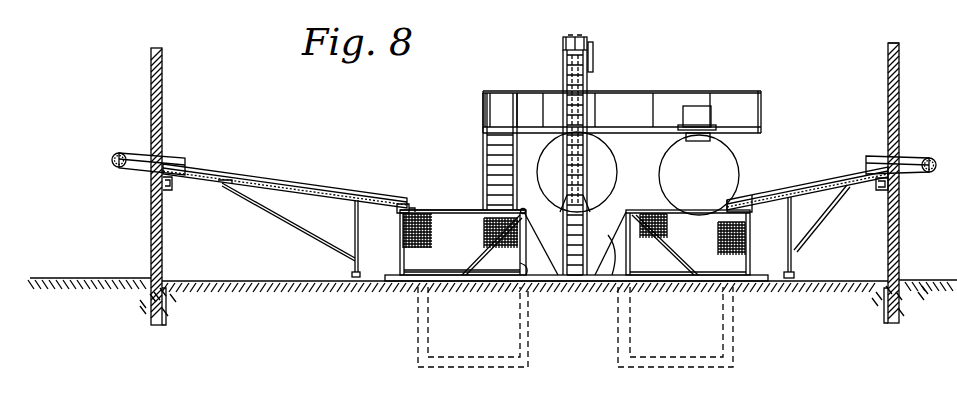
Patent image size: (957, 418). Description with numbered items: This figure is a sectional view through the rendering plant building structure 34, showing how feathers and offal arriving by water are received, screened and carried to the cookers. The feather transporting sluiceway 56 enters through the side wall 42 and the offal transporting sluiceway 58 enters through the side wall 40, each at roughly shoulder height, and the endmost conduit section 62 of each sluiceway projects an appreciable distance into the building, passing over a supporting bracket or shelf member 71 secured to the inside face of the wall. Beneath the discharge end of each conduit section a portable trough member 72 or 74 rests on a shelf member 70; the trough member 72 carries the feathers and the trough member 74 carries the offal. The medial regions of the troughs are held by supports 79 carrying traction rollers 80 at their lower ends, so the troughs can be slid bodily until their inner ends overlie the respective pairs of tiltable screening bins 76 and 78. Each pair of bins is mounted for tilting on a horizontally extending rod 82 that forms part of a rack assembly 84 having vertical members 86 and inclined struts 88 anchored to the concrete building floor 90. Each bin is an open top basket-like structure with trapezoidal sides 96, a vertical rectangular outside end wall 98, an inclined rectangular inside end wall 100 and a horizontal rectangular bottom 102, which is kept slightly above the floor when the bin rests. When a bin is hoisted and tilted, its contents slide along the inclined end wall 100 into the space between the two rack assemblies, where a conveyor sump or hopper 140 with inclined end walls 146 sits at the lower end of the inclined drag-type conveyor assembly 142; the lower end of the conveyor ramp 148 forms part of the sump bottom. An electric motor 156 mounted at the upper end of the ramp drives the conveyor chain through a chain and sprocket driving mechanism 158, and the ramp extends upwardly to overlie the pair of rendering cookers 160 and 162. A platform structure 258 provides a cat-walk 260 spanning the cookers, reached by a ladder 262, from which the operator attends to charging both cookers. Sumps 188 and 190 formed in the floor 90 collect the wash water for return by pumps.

The building structure 34 is at (902, 91).
The side wall 40 is at (887, 66).
The side wall 42 is at (163, 83).
The sluiceway 56 is at (117, 169).
The sluiceway 58 is at (913, 177).
The conduit section 62 is at (137, 155).
The shelf member 70 is at (170, 187).
The supporting bracket or shelf member 71 is at (874, 186).
The portable trough member 72 is at (301, 194).
The portable trough member 74 is at (808, 196).
The screening bins 76 is at (464, 236).
The screening bins 78 is at (704, 232).
The supports 79 is at (787, 247).
The traction rollers 80 is at (789, 284).
The horizontally extending rod 82 is at (522, 207).
The rack assembly 84 is at (529, 245).
The vertical members 86 is at (526, 281).
The inclined struts 88 is at (471, 262).
The building floor 90 is at (213, 280).
The trapezoidal sides 96 is at (434, 210).
The vertical rectangular outside end wall 98 is at (390, 209).
The inclined rectangular inside end wall 100 is at (501, 243).
The horizontal rectangular bottom 102 is at (420, 278).
The conveyor sump or hopper 140 is at (554, 263).
The inclined drag-type conveyor assembly 142 is at (594, 84).
The end walls 146 is at (606, 250).
The conveyor ramp 148 is at (588, 120).
The electric motor 156 is at (570, 36).
The chain and sprocket driving mechanism 158 is at (597, 55).
The rendering cooker 160 is at (612, 157).
The rendering cooker 162 is at (738, 157).
The sump 188 is at (650, 360).
The sump 190 is at (428, 356).
The platform structure 258 is at (733, 90).
The cat-walk 260 is at (667, 128).
The ladder 262 is at (482, 146).